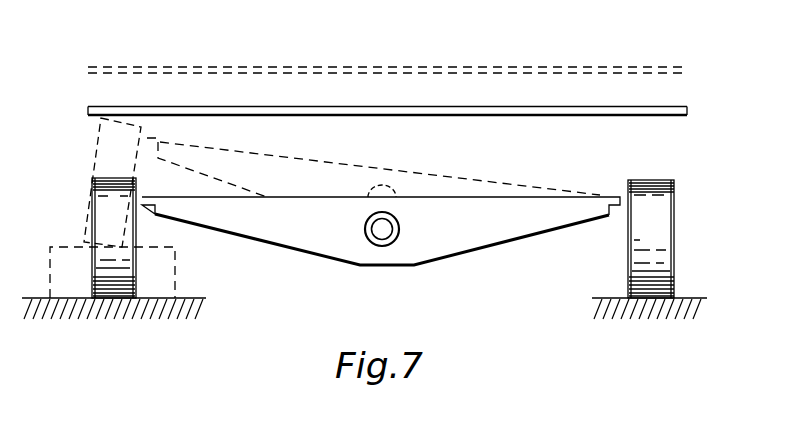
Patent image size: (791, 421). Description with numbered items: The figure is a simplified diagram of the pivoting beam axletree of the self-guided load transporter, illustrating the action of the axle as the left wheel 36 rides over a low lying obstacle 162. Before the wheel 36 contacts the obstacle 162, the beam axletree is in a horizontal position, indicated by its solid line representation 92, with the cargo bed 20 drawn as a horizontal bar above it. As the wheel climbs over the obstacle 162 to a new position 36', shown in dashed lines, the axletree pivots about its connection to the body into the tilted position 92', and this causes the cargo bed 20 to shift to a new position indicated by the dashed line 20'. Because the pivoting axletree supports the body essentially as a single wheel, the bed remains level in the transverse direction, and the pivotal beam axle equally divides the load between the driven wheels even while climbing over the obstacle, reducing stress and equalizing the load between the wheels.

The cargo bed 20 is at (387, 99).
The shifted position of cargo bed 20' is at (387, 51).
The fixed rotation wheel 36 is at (83, 238).
The raised position of wheel 36' is at (91, 182).
The beam axletree 92 is at (381, 234).
The pivoted position of axletree 92' is at (373, 163).
The low lying obstacle 162 is at (64, 239).